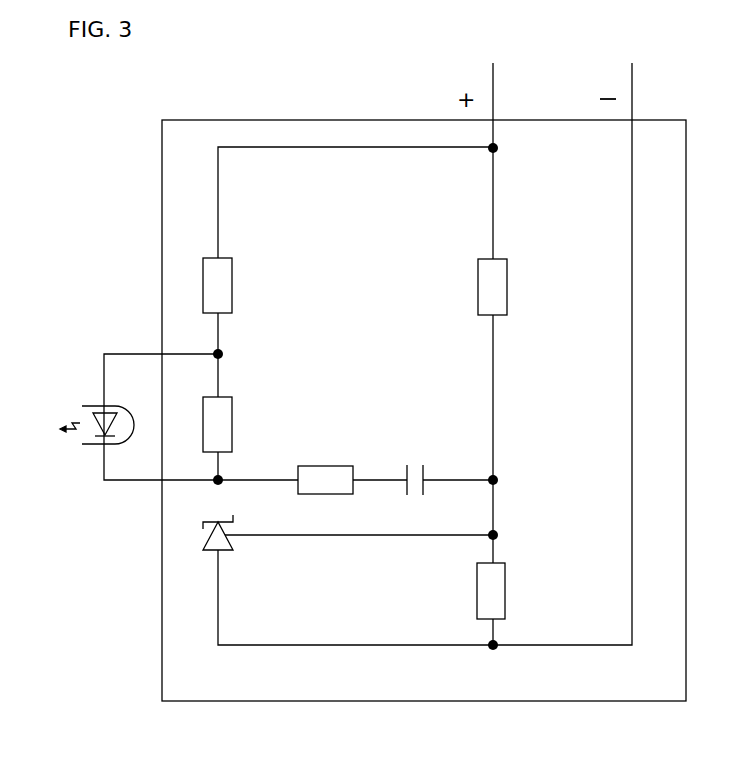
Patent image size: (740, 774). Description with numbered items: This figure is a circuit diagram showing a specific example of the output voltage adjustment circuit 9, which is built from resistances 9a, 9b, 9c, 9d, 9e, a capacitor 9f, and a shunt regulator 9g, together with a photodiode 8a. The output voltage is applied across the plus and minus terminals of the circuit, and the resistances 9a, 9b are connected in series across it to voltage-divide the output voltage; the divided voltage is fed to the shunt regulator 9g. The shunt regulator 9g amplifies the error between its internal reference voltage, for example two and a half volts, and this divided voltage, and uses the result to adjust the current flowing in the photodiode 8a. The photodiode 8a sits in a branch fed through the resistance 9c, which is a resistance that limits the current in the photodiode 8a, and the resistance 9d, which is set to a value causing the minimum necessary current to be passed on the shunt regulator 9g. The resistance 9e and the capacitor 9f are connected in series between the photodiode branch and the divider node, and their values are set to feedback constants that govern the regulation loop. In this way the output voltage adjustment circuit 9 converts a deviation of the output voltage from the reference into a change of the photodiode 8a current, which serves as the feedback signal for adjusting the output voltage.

The output voltage adjustment circuit 9 is at (324, 716).
The resistance 9a is at (520, 288).
The resistance 9b is at (518, 591).
The resistance 9c is at (245, 287).
The resistance 9d is at (245, 412).
The resistance 9e is at (340, 452).
The capacitor 9f is at (422, 452).
The shunt regulator 9g is at (245, 549).
The photodiode 8a is at (77, 383).